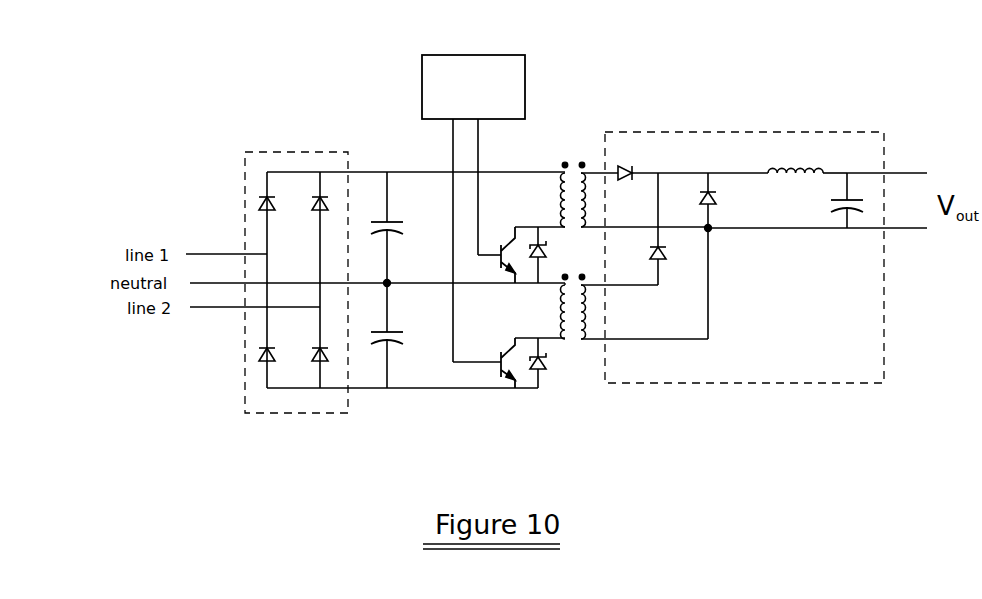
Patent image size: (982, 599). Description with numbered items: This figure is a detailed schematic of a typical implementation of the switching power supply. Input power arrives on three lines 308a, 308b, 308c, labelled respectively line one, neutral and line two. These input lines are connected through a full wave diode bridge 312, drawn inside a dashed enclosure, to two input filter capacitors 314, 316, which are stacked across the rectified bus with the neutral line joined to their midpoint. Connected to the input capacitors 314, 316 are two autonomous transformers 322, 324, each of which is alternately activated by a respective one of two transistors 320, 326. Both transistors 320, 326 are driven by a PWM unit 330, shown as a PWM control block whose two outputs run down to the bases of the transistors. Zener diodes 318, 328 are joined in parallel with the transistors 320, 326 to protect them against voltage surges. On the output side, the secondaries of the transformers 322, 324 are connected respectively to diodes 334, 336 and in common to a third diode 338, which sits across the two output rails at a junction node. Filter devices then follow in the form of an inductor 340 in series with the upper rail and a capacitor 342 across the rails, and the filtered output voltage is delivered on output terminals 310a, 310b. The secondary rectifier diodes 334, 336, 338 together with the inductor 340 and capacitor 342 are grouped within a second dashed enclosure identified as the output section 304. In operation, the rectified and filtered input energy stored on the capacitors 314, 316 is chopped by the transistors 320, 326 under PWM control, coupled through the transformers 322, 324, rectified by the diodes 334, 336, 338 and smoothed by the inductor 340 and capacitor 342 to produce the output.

The output rectifier and filter section 304 is at (736, 389).
The line 1 input line 308a is at (207, 247).
The neutral input line 308b is at (233, 277).
The line 2 input line 308c is at (224, 313).
The output terminal 310a is at (898, 166).
The output terminal 310b is at (898, 235).
The full wave diode bridge 312 is at (318, 420).
The input filter capacitor 314 is at (410, 224).
The input filter capacitor 316 is at (425, 320).
The Zener diode 318 is at (534, 241).
The transistor 320 is at (491, 266).
The autonomous transformer 322 is at (570, 184).
The autonomous transformer 324 is at (577, 297).
The transistor 326 is at (491, 378).
The Zener diode 328 is at (550, 362).
The PWM unit 330 is at (460, 49).
The diode 334 is at (623, 157).
The diode 336 is at (665, 266).
The third diode 338 is at (732, 199).
The inductor 340 is at (781, 164).
The capacitor 342 is at (827, 207).